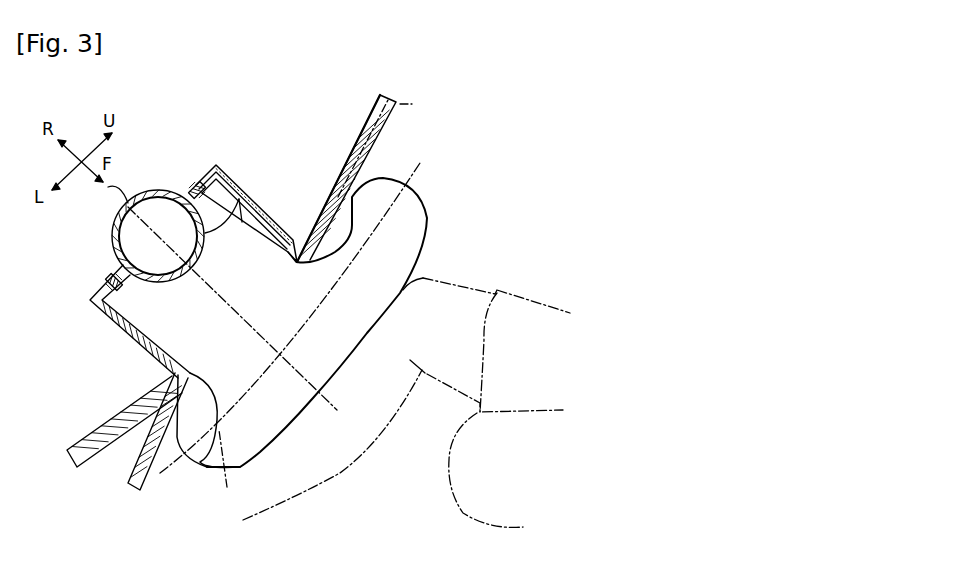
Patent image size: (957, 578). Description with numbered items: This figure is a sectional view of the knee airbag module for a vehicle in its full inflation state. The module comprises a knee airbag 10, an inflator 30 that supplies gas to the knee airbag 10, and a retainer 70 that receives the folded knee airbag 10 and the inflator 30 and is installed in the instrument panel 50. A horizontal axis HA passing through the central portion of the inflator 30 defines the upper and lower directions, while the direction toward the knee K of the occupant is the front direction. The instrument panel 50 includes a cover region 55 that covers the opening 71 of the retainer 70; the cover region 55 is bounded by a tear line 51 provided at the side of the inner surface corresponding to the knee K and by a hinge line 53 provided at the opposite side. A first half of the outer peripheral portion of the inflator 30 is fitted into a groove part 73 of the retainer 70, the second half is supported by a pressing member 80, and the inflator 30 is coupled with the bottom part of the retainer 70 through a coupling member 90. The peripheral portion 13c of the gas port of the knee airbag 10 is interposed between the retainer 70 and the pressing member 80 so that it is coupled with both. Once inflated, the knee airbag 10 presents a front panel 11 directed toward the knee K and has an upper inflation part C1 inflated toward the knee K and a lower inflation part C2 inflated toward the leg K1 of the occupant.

The knee airbag 10 is at (242, 222).
The front panel 11 is at (427, 227).
The peripheral portion 13c is at (108, 275).
The inflator 30 is at (172, 210).
The instrument panel 50 is at (364, 173).
The tear line 51 is at (350, 195).
The hinge line 53 is at (197, 440).
The cover region 55 is at (132, 458).
The retainer 70 is at (273, 223).
The opening 71 is at (296, 247).
The groove part 73 is at (145, 190).
The pressing member 80 is at (242, 178).
The coupling member 90 is at (196, 184).
The horizontal axis HA is at (113, 193).
The upper inflation part C1 is at (393, 219).
The lower inflation part C2 is at (226, 441).
The knee K is at (468, 294).
The leg K1 is at (352, 466).